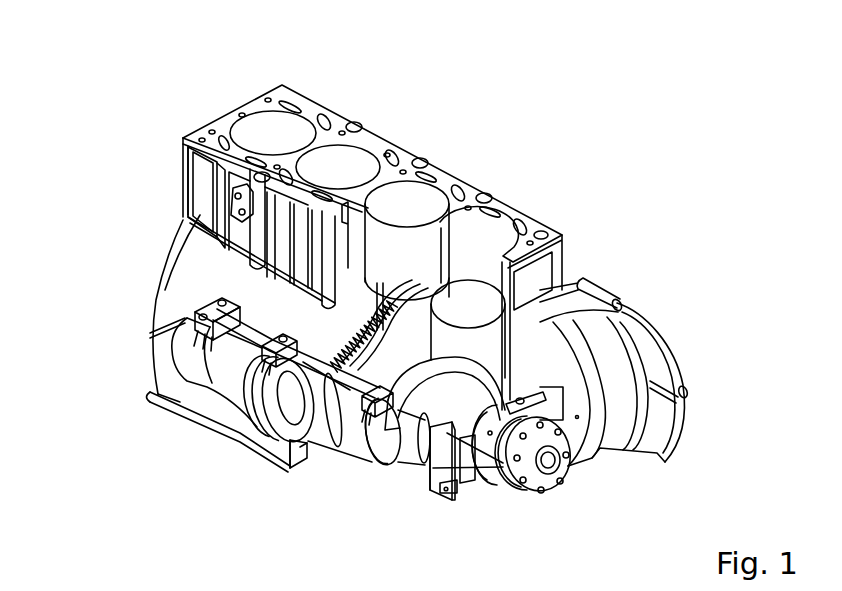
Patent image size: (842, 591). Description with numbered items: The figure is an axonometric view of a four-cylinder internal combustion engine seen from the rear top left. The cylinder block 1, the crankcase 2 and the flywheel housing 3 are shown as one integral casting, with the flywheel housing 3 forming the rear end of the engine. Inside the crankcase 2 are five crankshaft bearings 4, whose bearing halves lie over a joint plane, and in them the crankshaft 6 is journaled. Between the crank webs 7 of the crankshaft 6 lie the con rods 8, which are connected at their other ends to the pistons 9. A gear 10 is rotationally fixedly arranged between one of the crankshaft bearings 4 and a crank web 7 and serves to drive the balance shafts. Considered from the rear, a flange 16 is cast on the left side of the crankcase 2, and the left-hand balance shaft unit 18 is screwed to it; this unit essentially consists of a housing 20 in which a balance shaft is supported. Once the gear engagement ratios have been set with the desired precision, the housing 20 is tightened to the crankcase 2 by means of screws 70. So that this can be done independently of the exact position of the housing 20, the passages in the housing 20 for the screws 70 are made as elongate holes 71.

The cylinder block 1 is at (200, 172).
The crankcase 2 is at (193, 253).
The flywheel housing 3 is at (577, 302).
The crankshaft bearing 4 is at (512, 410).
The crankshaft 6 is at (547, 459).
The crank web 7 is at (477, 405).
The con rod 8 is at (418, 290).
The piston 9 is at (415, 195).
The gear 10 is at (327, 380).
The flange 16 is at (220, 302).
The balance shaft unit 18 is at (214, 393).
The housing 20 is at (226, 357).
The screw 70 is at (200, 312).
The elongate hole 71 is at (278, 345).